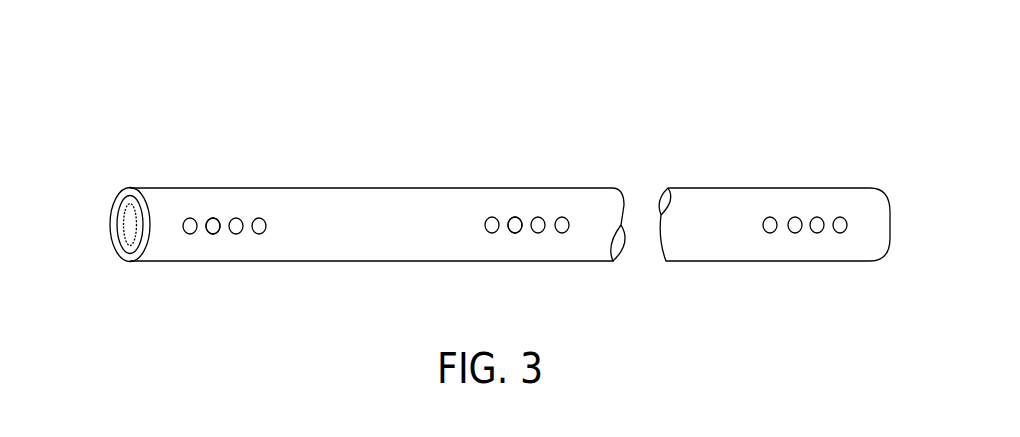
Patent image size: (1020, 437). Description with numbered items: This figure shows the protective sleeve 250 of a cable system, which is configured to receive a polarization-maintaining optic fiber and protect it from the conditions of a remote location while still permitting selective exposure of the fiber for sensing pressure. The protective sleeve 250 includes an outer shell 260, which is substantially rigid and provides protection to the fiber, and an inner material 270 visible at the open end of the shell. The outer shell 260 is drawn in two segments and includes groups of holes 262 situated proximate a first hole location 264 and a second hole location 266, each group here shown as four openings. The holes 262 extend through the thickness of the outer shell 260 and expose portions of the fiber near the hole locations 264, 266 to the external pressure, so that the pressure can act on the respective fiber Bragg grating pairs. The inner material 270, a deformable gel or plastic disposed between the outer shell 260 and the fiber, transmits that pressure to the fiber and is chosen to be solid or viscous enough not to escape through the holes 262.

The protective sleeve 250 is at (763, 74).
The outer shell 260 is at (390, 262).
The holes 262 is at (213, 235).
The hole location 264 is at (219, 185).
The hole location 266 is at (525, 185).
The inner material 270 is at (111, 220).